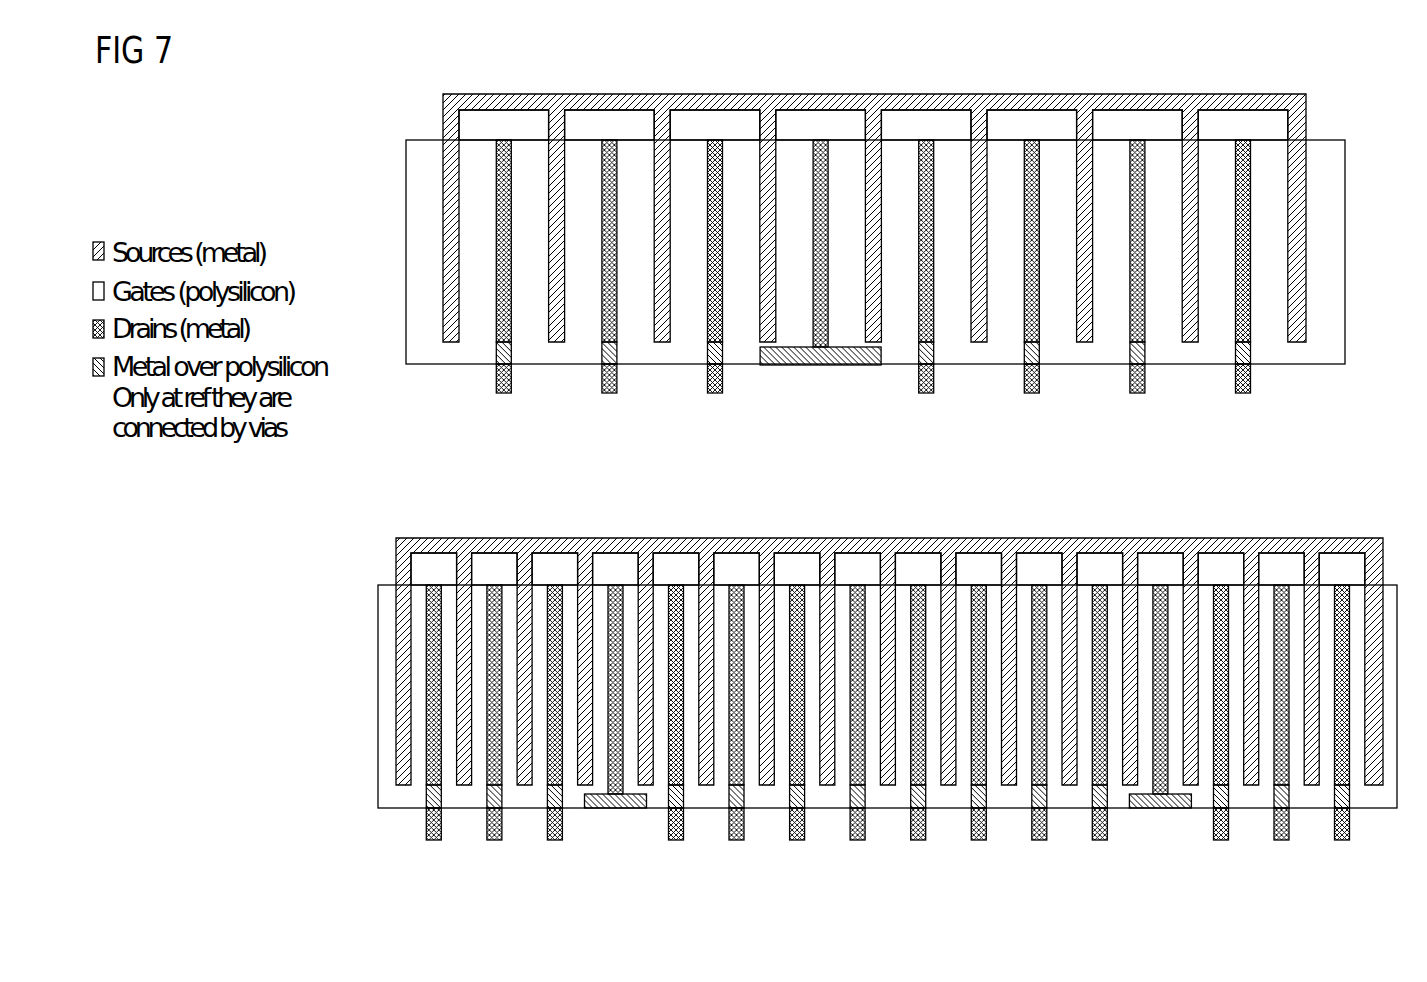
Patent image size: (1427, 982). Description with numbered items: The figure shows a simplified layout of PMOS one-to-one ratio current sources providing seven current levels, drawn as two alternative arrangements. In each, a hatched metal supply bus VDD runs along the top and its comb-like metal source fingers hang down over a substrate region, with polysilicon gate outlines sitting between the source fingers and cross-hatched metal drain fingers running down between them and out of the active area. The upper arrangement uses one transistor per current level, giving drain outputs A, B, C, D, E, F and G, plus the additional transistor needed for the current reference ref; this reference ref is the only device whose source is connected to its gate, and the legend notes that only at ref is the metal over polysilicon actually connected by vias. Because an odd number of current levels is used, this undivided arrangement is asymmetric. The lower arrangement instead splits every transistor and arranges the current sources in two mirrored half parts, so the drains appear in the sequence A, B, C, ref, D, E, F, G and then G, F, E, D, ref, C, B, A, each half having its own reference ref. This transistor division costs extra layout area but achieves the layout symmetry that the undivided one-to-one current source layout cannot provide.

The VDD supply line VDD is at (898, 94).
The current reference transistor ref is at (888, 496).
The current source A is at (887, 512).
The current source B is at (888, 512).
The current source C is at (888, 512).
The current source D is at (887, 512).
The current source E is at (888, 512).
The current source F is at (967, 512).
The current source G is at (1050, 512).